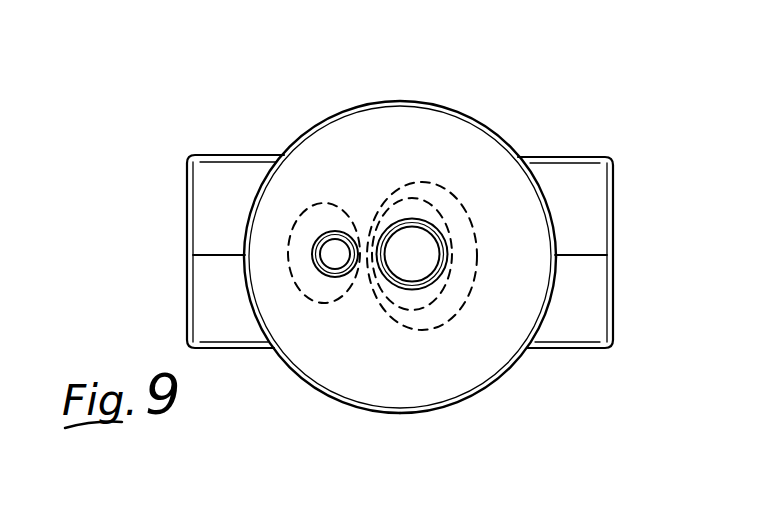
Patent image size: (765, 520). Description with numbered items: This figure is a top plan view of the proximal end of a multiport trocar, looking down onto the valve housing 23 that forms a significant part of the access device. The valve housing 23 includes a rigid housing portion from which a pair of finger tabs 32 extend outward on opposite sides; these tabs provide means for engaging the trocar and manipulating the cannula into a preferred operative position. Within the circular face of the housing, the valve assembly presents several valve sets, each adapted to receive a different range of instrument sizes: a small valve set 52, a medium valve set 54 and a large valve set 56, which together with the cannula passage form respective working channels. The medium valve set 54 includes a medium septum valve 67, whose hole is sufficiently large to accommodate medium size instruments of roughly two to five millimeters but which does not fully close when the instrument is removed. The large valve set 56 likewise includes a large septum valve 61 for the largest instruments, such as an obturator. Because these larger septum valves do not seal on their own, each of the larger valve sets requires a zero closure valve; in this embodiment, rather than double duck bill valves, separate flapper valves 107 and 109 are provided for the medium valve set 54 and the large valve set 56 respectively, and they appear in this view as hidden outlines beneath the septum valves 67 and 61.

The valve housing 23 is at (520, 360).
The finger tabs 32 is at (595, 183).
The small valve set 52 is at (318, 148).
The medium valve set 54 is at (333, 357).
The large valve set 56 is at (463, 385).
The large septum valve 61 is at (428, 247).
The medium septum valve 67 is at (325, 250).
The flapper valve 107 is at (341, 200).
The flapper valve 109 is at (418, 158).